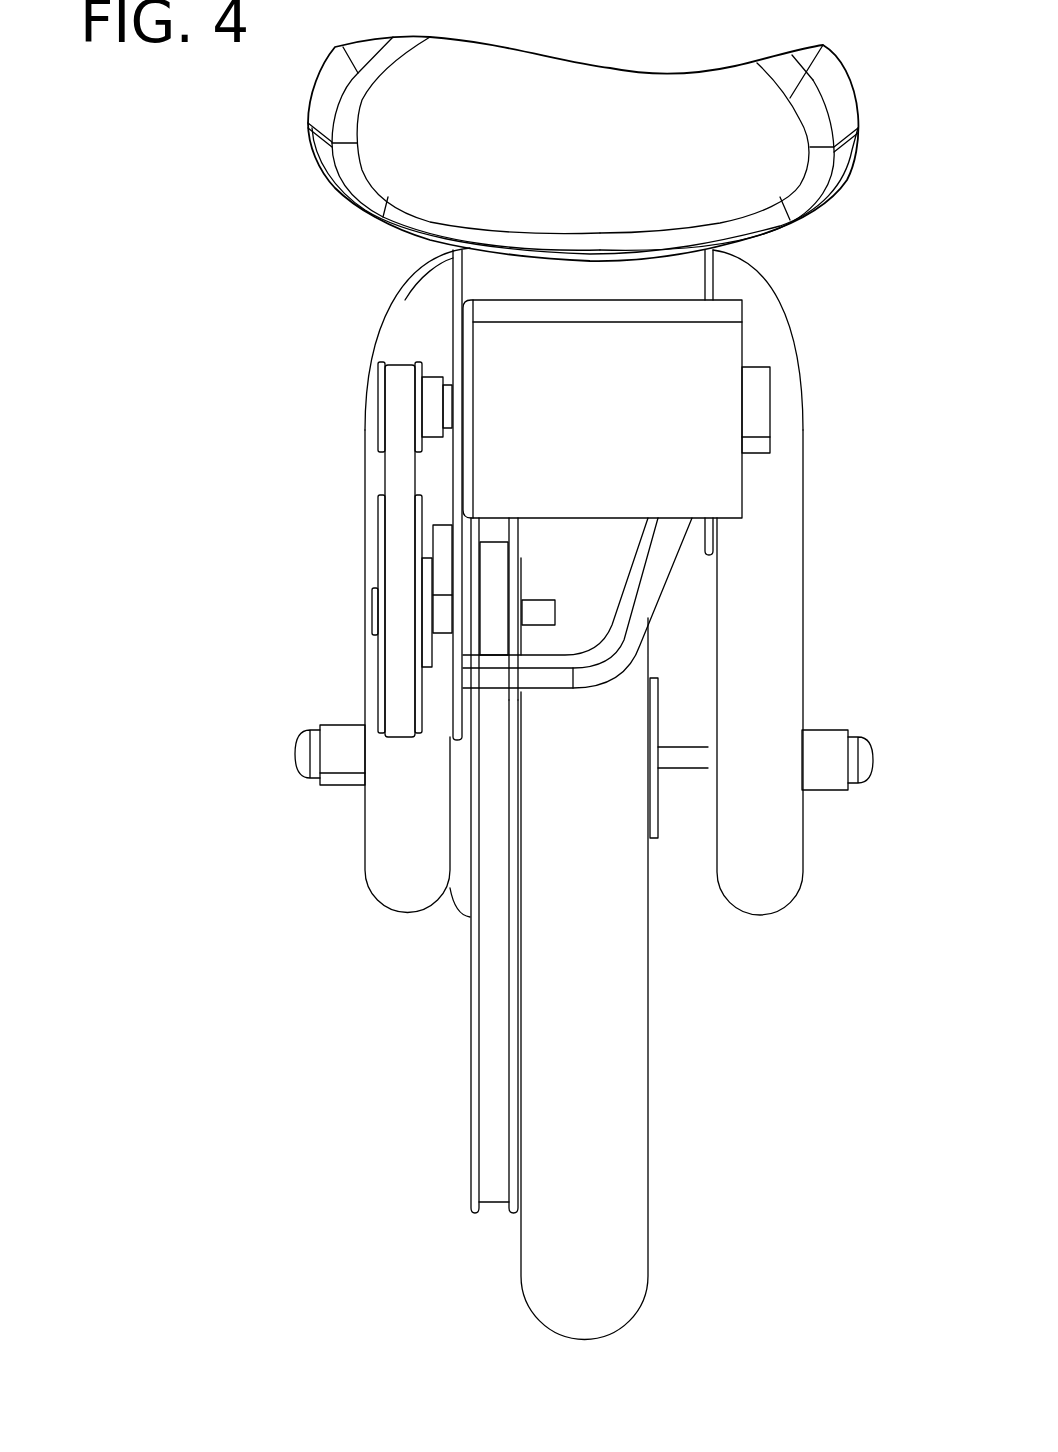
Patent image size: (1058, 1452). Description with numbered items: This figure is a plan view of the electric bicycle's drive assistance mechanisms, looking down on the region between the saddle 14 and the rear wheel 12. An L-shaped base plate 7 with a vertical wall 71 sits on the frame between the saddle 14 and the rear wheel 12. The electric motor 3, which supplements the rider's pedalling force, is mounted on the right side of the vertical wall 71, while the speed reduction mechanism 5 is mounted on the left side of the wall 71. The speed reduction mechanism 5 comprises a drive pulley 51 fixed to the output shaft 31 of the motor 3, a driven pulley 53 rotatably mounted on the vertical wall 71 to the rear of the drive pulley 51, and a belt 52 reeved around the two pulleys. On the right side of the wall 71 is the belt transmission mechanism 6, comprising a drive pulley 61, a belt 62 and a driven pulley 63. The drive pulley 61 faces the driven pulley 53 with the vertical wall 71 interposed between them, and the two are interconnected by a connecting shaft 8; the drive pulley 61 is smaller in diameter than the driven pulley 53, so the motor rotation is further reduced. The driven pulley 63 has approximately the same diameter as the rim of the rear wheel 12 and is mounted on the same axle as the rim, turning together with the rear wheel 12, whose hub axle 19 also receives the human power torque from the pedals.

The saddle 14 is at (790, 174).
The base plate 7 is at (480, 272).
The vertical wall 71 is at (456, 296).
The electric motor 3 is at (735, 343).
The output shaft 31 is at (443, 378).
The speed reduction mechanism 5 is at (290, 413).
The drive pulley 51 is at (380, 440).
The belt 52 is at (393, 484).
The driven pulley 53 is at (382, 513).
The belt transmission mechanism 6 is at (547, 742).
The drive pulley 61 is at (517, 549).
The belt 62 is at (494, 1198).
The driven pulley 63 is at (468, 1020).
The connecting shaft 8 is at (553, 608).
The rear wheel 12 is at (648, 1060).
The hub axle 19 is at (682, 757).